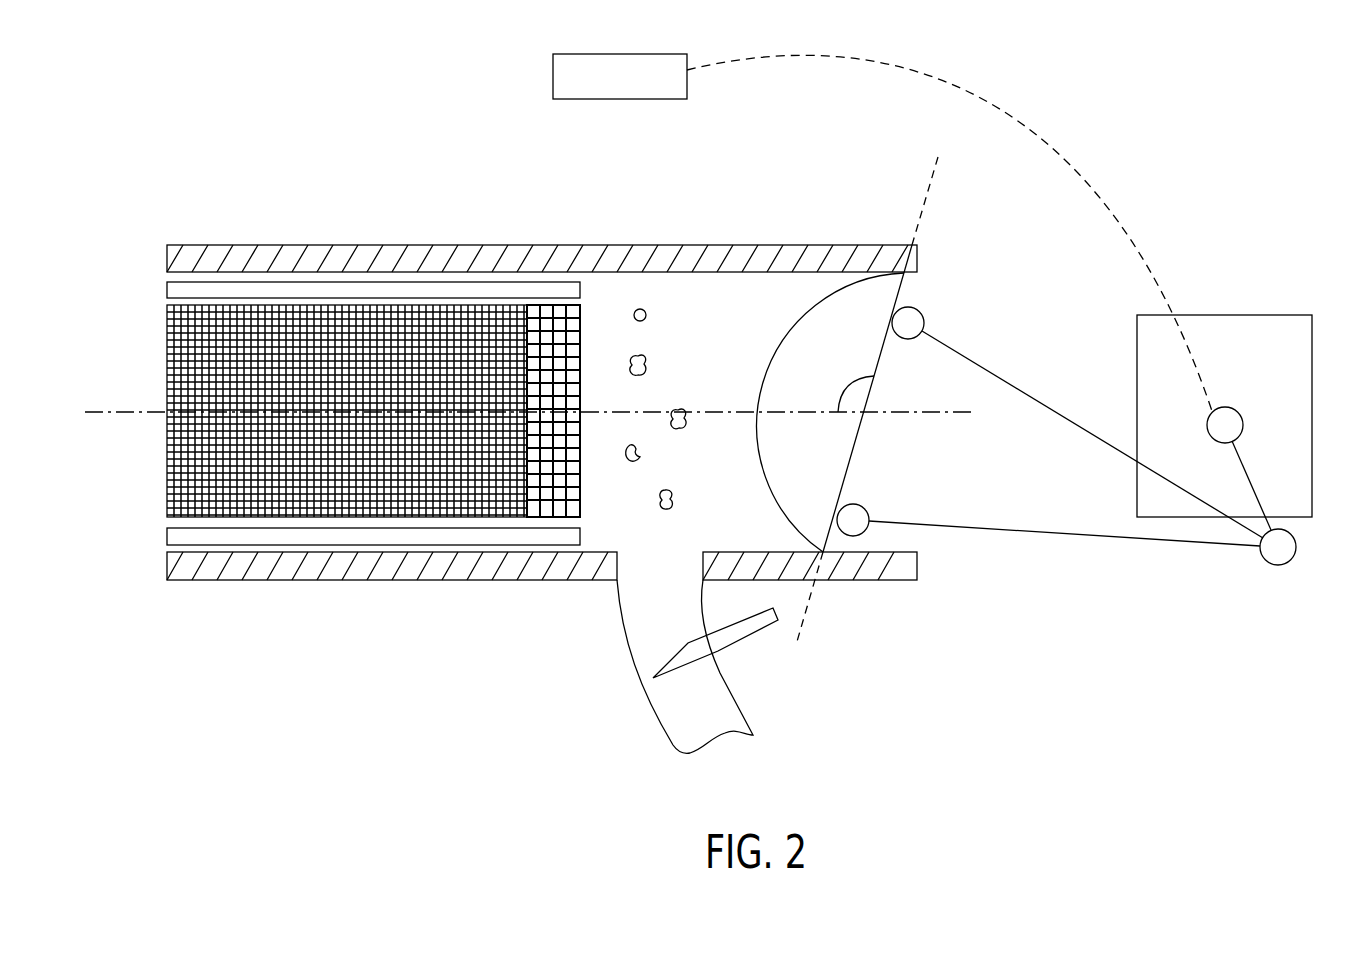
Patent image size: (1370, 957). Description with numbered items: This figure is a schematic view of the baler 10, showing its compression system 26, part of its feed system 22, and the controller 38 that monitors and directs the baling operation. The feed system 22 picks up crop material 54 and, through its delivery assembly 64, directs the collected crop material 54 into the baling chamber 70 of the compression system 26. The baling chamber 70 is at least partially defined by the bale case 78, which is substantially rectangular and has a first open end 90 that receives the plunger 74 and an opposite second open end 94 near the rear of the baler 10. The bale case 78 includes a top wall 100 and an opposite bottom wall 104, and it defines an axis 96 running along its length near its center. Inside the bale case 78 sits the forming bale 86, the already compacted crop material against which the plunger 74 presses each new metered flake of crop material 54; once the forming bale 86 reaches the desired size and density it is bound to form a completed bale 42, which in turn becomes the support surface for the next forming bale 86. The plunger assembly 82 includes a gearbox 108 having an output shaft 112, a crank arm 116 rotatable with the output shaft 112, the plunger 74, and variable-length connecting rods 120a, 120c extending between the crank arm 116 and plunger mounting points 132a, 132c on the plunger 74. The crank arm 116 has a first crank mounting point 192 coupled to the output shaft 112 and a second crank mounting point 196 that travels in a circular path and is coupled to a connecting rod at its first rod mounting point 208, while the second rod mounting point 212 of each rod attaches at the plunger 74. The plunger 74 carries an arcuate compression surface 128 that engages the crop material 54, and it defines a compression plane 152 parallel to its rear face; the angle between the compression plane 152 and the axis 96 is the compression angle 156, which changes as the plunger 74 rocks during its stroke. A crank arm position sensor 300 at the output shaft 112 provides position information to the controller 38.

The baler 10 is at (830, 146).
The feed system 22 is at (642, 693).
The compression system 26 is at (1156, 248).
The controller 38 is at (553, 77).
The bale 42 is at (180, 455).
The crop material 54 is at (645, 320).
The delivery assembly 64 is at (737, 640).
The baling chamber 70 is at (720, 326).
The plunger 74 is at (847, 401).
The bale case 78 is at (285, 572).
The plunger assembly 82 is at (1118, 560).
The forming bale 86 is at (572, 318).
The first open end 90 is at (916, 571).
The second open end 94 is at (167, 245).
The axis 96 is at (99, 408).
The top wall 100 is at (382, 290).
The bottom wall 104 is at (410, 537).
The gearbox 108 is at (1290, 355).
The output shaft 112 is at (1244, 388).
The crank arm 116 is at (1268, 503).
The variable-length connecting rod 120a is at (1032, 394).
The variable-length connecting rod 120c is at (1033, 537).
The compression surface 128 is at (760, 488).
The plunger mounting point 132a is at (924, 316).
The plunger mounting point 132c is at (868, 512).
The compression plane 152 is at (933, 188).
The compression angle 156 is at (852, 385).
The first crank mounting point 192 is at (1221, 388).
The second crank mounting point 196 is at (1277, 579).
The first rod mounting point 208 is at (1270, 561).
The second rod mounting point 212 is at (918, 393).
The crank arm position sensor 300 is at (1213, 406).